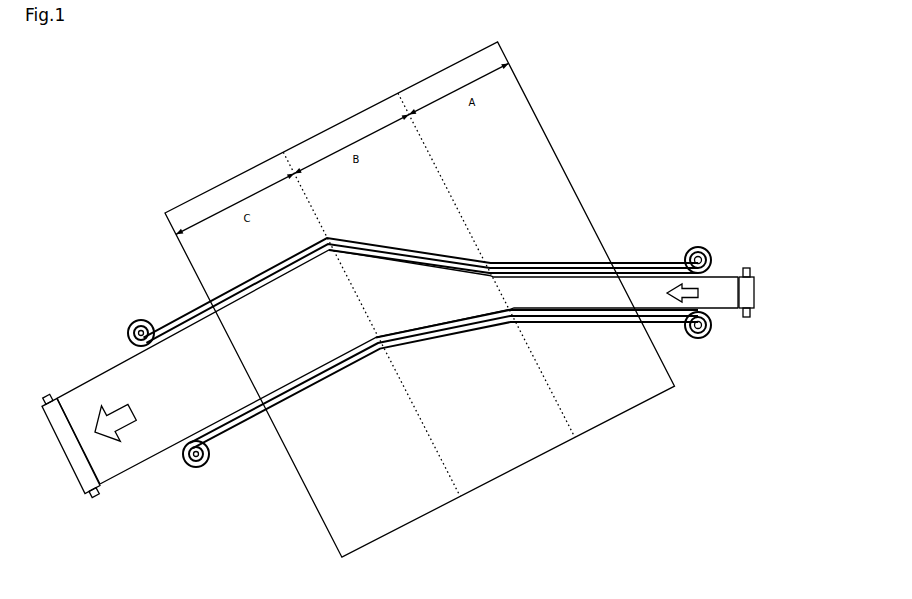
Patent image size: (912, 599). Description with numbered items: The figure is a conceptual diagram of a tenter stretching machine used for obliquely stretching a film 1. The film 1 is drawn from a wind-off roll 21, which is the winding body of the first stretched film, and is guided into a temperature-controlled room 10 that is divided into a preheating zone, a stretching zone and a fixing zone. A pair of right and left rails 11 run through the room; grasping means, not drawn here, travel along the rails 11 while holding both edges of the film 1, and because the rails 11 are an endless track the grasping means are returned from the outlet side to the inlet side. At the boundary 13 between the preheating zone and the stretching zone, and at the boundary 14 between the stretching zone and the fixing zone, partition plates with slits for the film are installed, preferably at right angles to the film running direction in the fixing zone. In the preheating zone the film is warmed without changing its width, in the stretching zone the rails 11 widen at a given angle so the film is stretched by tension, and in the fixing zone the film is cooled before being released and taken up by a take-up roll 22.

The film 1 is at (717, 300).
The temperature-controlled room 10 is at (536, 105).
The rail 11 is at (632, 273).
The boundary between preheating zone and stretching zone 13 is at (559, 400).
The boundary between stretching zone and fixing zone 14 is at (447, 460).
The wind-off roll 21 is at (759, 295).
The take-up roll 22 is at (51, 446).